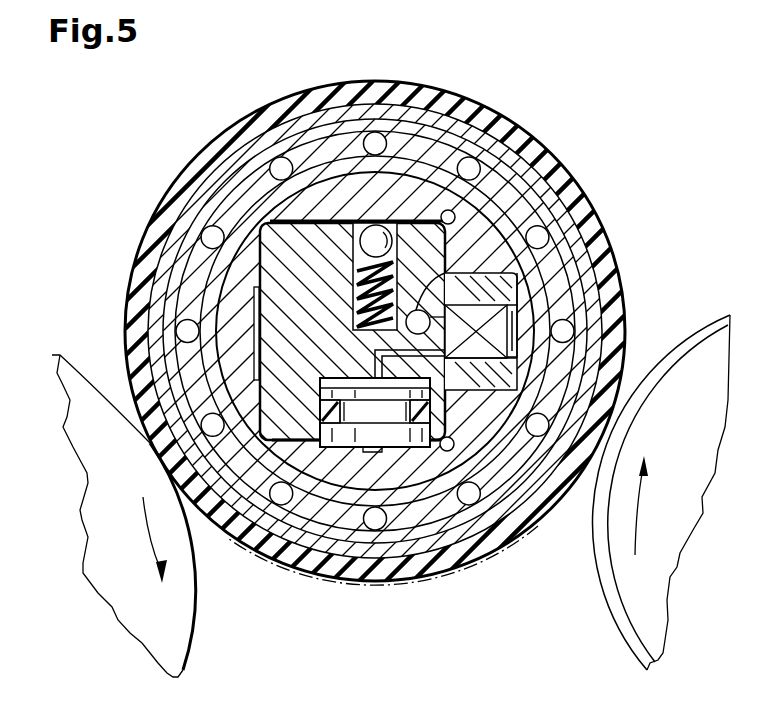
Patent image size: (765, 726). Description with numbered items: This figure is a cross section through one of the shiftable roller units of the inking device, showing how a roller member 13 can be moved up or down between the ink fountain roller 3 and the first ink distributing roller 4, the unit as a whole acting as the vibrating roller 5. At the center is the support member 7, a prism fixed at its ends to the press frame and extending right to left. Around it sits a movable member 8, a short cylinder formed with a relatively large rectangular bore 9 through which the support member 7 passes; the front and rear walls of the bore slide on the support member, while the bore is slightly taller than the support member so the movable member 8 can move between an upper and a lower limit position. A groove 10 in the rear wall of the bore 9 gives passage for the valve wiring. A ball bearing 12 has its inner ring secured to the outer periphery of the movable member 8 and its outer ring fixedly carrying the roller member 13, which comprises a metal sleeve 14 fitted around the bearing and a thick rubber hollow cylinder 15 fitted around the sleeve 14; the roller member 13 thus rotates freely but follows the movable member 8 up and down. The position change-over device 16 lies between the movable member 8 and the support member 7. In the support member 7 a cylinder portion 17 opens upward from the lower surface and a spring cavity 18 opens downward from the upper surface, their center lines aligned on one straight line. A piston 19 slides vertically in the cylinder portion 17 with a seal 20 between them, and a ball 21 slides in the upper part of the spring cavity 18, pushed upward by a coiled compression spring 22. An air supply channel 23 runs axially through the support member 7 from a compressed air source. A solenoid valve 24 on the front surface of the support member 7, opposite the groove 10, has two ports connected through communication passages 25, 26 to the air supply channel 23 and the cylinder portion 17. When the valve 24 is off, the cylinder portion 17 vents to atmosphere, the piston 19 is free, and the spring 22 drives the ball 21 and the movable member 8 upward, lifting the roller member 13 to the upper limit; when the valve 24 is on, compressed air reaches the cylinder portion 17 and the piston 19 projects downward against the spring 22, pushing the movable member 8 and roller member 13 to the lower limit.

The ink fountain roller 3 is at (633, 648).
The first ink distributing roller 4 is at (183, 671).
The vibrating roller 5 is at (440, 80).
The support member 7 is at (283, 423).
The movable member 8 is at (205, 209).
The rectangular bore 9 is at (232, 156).
The groove 10 is at (600, 263).
The ball bearing 12 is at (500, 140).
The roller member 13 is at (376, 82).
The metal sleeve 14 is at (316, 124).
The rubber hollow cylinder 15 is at (257, 114).
The position change-over device 16 is at (517, 308).
The cylinder portion 17 is at (258, 346).
The spring cavity 18 is at (262, 222).
The piston 19 is at (345, 447).
The seal 20 is at (428, 418).
The ball 21 is at (470, 172).
The coiled compression spring 22 is at (260, 258).
The air supply channel 23 is at (447, 273).
The solenoid valve 24 is at (520, 338).
The communication passage 25 is at (515, 273).
The communication passage 26 is at (256, 300).